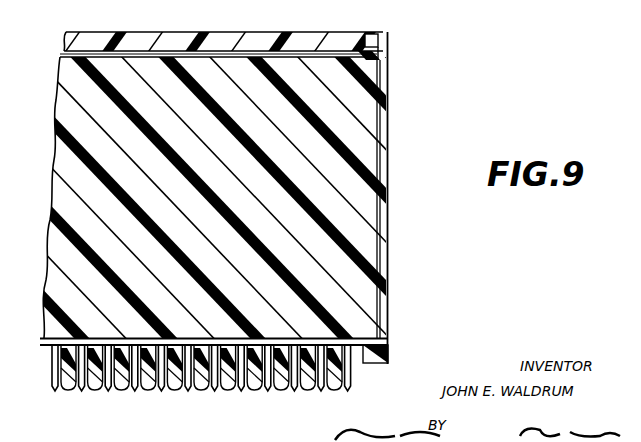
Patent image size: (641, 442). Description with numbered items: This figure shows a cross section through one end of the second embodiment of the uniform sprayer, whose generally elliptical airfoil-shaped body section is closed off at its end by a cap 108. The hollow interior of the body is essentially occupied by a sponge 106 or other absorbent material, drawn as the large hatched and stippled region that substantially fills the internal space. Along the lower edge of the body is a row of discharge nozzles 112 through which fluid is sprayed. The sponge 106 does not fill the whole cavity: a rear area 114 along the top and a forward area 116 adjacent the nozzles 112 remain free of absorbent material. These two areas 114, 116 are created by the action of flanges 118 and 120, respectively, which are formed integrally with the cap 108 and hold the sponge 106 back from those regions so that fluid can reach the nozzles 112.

The sponge 106 is at (358, 118).
The cap 108 is at (383, 174).
The discharge nozzles 112 is at (228, 392).
The rear area 114 is at (260, 52).
The forward area 116 is at (325, 345).
The flange 118 is at (366, 33).
The flange 120 is at (388, 338).